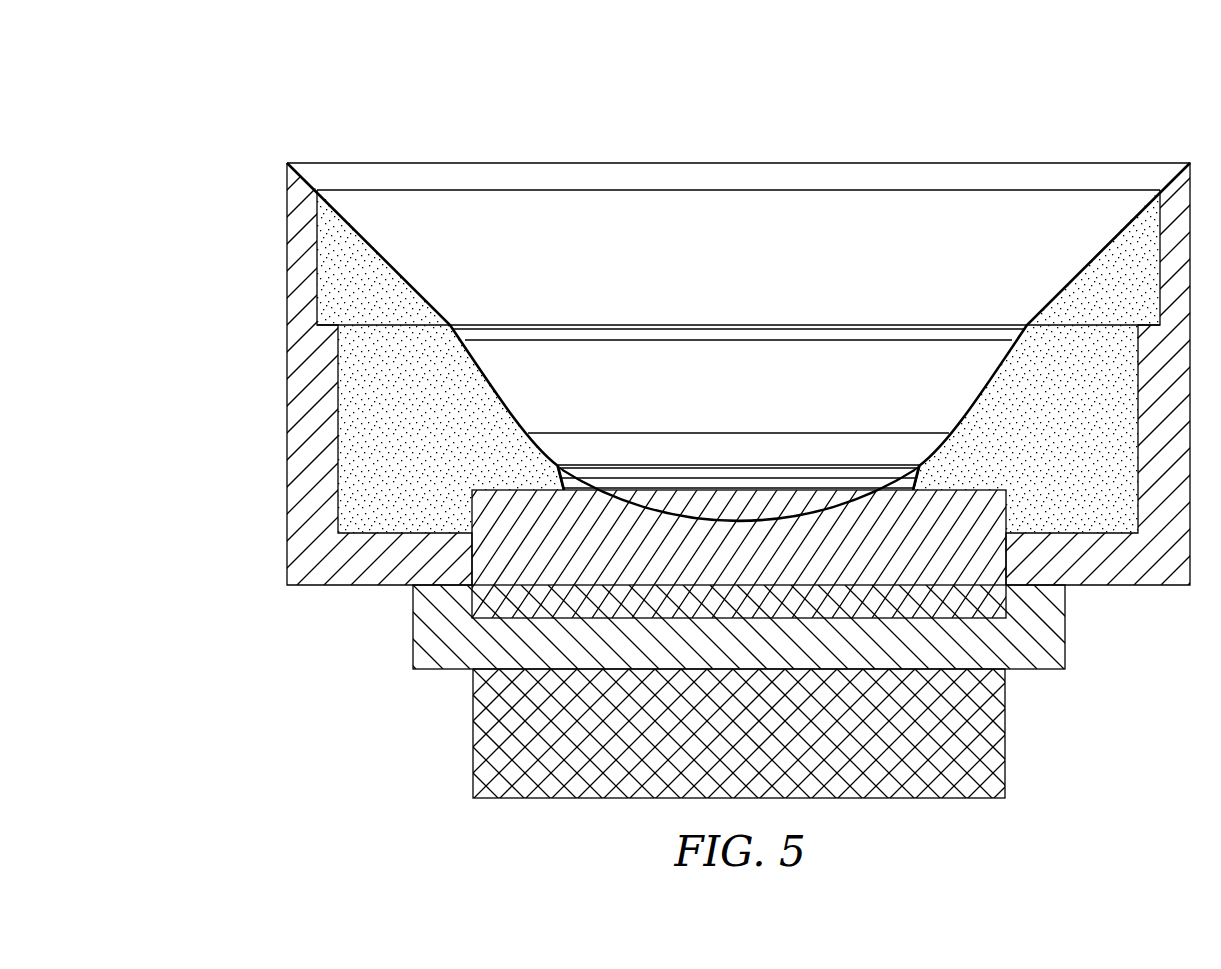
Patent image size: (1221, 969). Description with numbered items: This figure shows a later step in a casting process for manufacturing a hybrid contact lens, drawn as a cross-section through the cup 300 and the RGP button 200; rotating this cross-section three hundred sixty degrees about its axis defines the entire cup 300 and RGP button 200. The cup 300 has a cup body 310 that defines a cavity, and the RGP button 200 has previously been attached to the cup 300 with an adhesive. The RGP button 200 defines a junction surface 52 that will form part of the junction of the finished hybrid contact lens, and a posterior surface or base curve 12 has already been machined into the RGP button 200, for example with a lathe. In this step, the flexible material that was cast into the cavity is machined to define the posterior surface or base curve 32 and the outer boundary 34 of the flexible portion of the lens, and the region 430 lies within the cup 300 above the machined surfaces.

The cup 300 is at (1035, 122).
The cup body 310 is at (303, 207).
The reflective cavity 430 is at (823, 258).
The outer boundary 34 is at (583, 435).
The junction surface 52 is at (920, 483).
The posterior surface or base curve 32 is at (625, 500).
The RGP button 200 is at (967, 595).
The posterior surface or base curve 12 is at (807, 523).